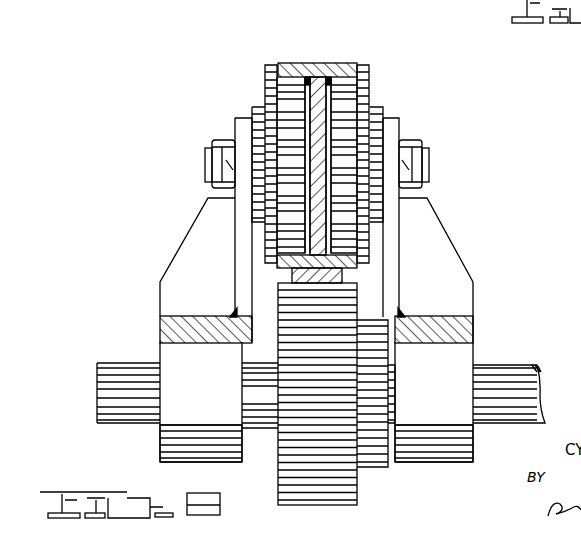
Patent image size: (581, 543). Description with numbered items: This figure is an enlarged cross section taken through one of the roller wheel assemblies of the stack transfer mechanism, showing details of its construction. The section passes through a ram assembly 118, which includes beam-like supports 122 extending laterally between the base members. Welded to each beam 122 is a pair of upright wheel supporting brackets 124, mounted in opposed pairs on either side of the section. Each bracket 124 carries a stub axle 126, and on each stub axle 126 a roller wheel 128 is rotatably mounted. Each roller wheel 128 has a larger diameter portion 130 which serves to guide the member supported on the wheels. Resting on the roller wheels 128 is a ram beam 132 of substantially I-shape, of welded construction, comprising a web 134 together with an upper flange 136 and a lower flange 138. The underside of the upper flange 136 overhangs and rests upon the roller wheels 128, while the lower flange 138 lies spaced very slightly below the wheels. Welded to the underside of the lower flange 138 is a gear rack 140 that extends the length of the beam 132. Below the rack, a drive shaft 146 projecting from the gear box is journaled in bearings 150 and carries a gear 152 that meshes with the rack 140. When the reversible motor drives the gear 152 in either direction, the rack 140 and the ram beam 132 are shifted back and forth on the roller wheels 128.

The ram assembly 118 is at (493, 262).
The beam-like support 122 is at (178, 331).
The upright wheel supporting bracket 124 is at (205, 243).
The stub axle 126 is at (207, 165).
The roller wheel 128 is at (285, 97).
The larger diameter portion 130 is at (268, 72).
The ram beam 132 is at (318, 57).
The web 134 is at (320, 75).
The upper flange 136 is at (292, 67).
The lower flange 138 is at (355, 266).
The gear rack 140 is at (295, 272).
The drive shaft 146 is at (110, 398).
The bearing 150 is at (177, 442).
The gear 152 is at (285, 460).